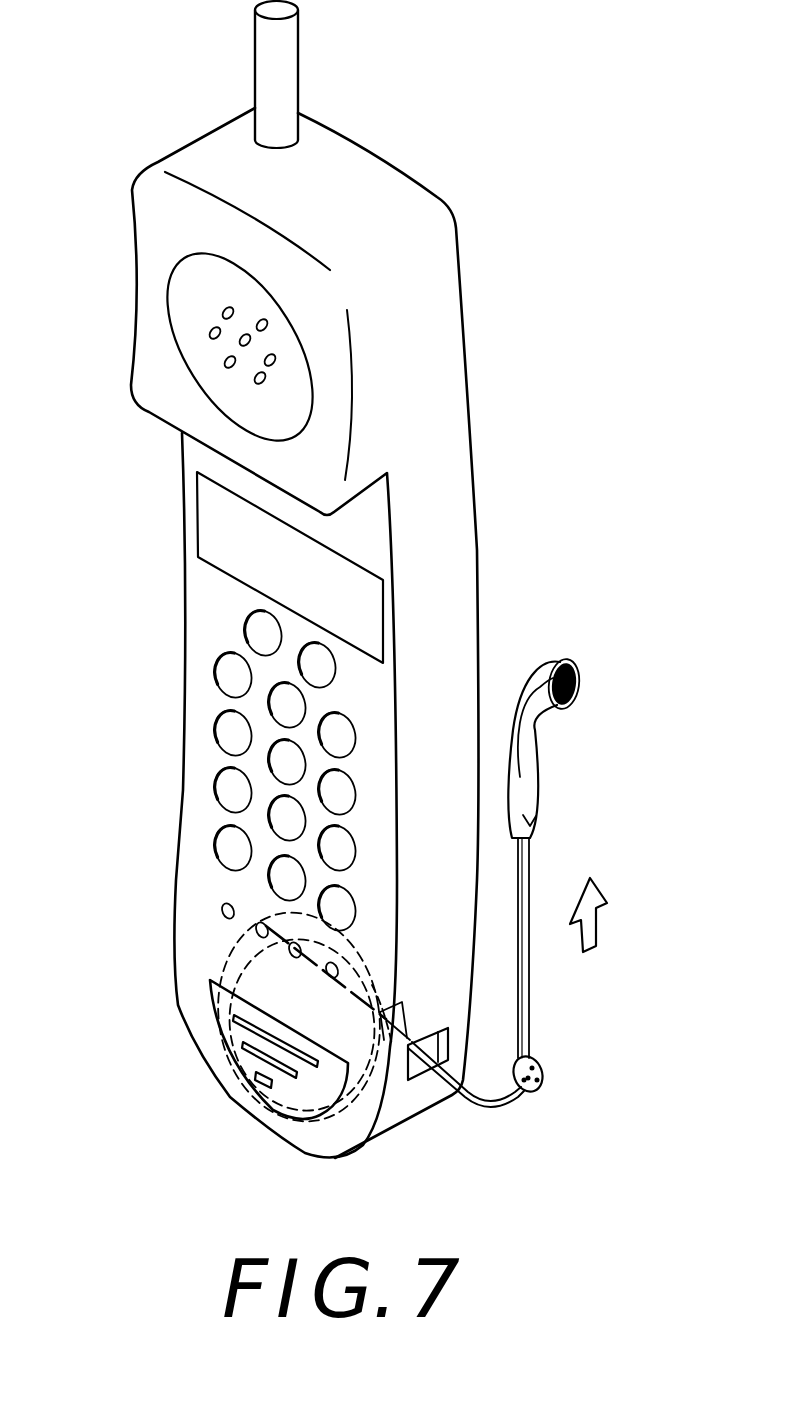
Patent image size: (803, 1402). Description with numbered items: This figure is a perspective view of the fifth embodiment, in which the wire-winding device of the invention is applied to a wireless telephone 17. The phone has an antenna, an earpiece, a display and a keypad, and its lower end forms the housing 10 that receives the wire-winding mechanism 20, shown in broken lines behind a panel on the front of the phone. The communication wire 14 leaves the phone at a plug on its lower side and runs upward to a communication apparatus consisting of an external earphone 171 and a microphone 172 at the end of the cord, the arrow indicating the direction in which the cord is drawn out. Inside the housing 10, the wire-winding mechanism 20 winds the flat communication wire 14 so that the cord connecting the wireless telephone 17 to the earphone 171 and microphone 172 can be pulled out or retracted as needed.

The housing 10 is at (443, 535).
The communication wire 14 is at (460, 1105).
The wireless telephone 17 is at (576, 652).
The external earphone 171 is at (576, 668).
The microphone 172 is at (544, 1074).
The wire-winding mechanism 20 is at (203, 960).